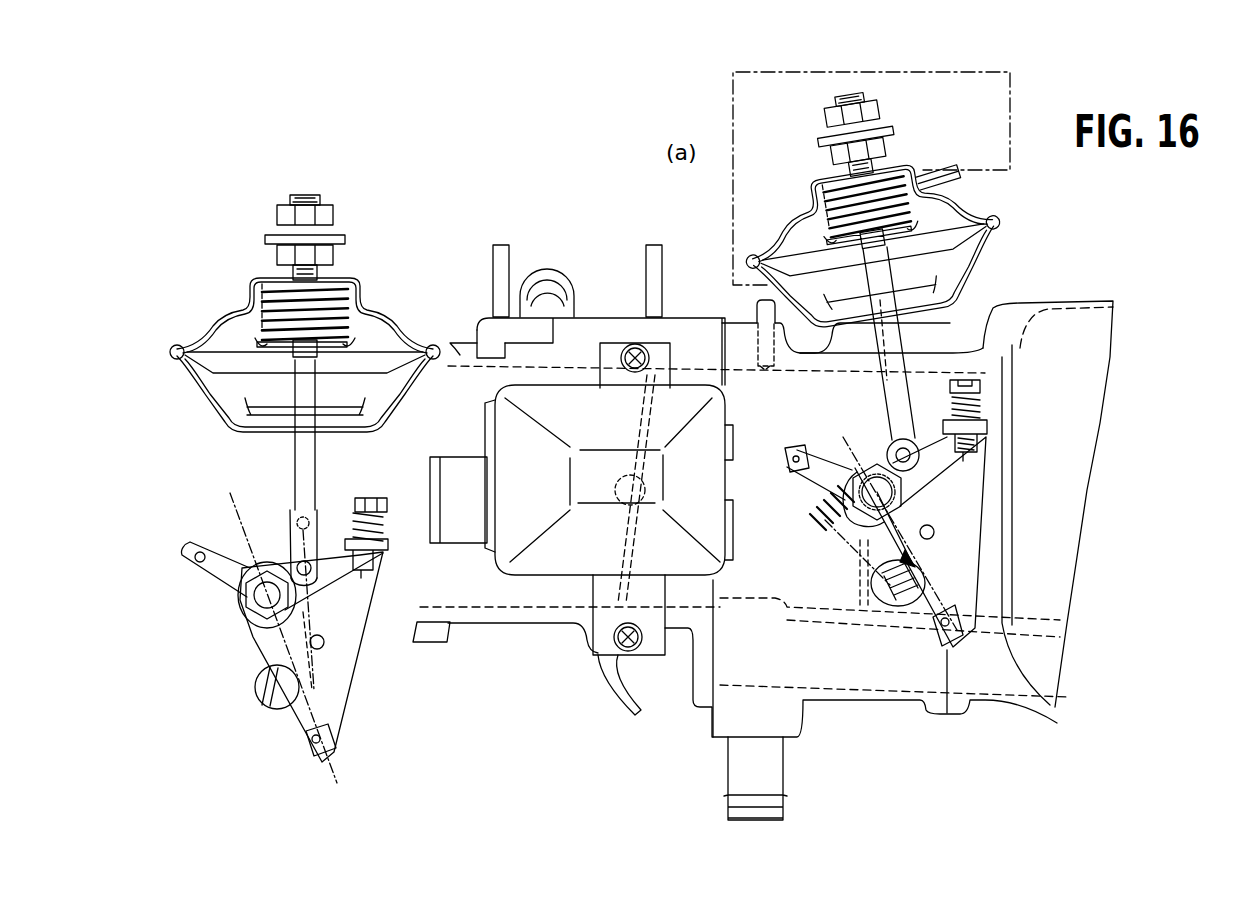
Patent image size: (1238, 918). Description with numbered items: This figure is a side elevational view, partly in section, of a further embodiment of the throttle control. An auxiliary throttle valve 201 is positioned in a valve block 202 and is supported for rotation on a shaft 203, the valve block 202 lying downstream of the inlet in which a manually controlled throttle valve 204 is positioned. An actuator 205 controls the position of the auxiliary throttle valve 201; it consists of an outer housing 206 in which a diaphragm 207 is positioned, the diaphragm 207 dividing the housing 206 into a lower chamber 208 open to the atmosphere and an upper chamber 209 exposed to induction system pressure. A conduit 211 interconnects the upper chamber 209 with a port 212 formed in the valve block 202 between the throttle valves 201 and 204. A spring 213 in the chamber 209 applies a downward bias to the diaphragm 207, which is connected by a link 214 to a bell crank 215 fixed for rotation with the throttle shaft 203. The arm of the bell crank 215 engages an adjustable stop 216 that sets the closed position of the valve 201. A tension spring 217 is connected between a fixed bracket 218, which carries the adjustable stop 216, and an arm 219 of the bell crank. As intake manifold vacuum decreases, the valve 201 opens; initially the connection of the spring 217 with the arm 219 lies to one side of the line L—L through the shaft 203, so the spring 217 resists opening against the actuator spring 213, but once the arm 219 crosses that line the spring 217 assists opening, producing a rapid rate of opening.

The auxiliary throttle valve 201 is at (862, 585).
The valve block 202 is at (992, 342).
The shaft 203 is at (258, 600).
The manually controlled throttle valve 204 is at (632, 551).
The actuator 205 is at (197, 316).
The outer housing 206 is at (902, 278).
The diaphragm 207 is at (904, 236).
The lower chamber 208 is at (848, 308).
The upper chamber 209 is at (868, 208).
The conduit 211 is at (745, 72).
The port 212 is at (750, 308).
The spring 213 is at (347, 322).
The link 214 is at (310, 470).
The bell crank 215 is at (327, 590).
The adjustable stop 216 is at (988, 389).
The tension spring 217 is at (830, 523).
The fixed bracket 218 is at (344, 660).
The arm 219 is at (786, 470).